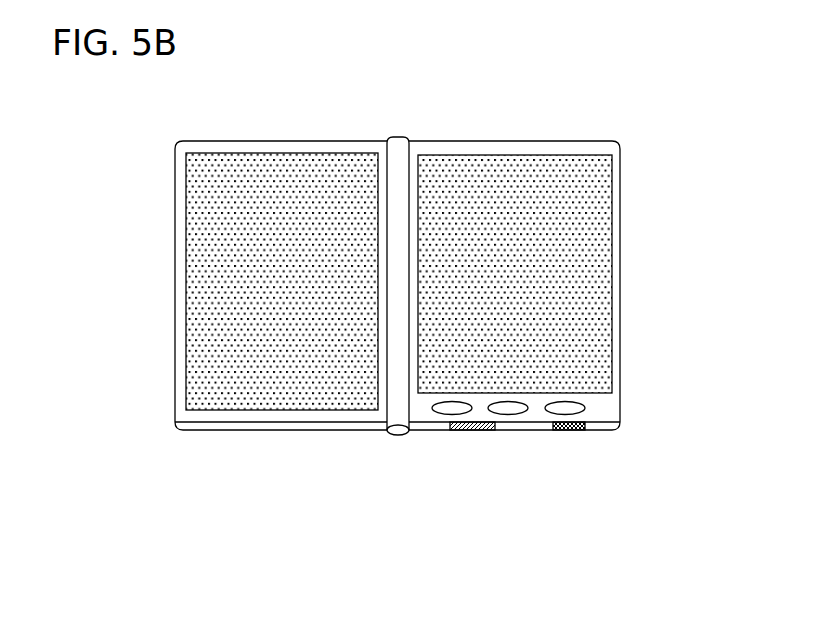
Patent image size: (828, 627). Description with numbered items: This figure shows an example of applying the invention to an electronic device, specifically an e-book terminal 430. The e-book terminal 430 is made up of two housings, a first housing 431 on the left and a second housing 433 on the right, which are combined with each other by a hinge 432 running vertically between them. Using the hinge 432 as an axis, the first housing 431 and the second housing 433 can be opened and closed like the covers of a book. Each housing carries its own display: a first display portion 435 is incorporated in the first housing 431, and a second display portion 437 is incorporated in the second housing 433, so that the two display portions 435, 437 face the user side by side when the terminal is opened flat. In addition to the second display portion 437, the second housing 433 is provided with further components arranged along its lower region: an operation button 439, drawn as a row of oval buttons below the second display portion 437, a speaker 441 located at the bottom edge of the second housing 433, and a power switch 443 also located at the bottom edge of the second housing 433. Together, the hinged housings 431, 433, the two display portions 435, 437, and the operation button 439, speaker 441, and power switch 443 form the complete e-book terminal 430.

The e-book terminal 430 is at (420, 118).
The first housing 431 is at (182, 215).
The hinge 432 is at (402, 410).
The second housing 433 is at (615, 215).
The first display portion 435 is at (217, 315).
The second display portion 437 is at (580, 315).
The operation button 439 is at (550, 410).
The speaker 441 is at (463, 430).
The power switch 443 is at (555, 430).